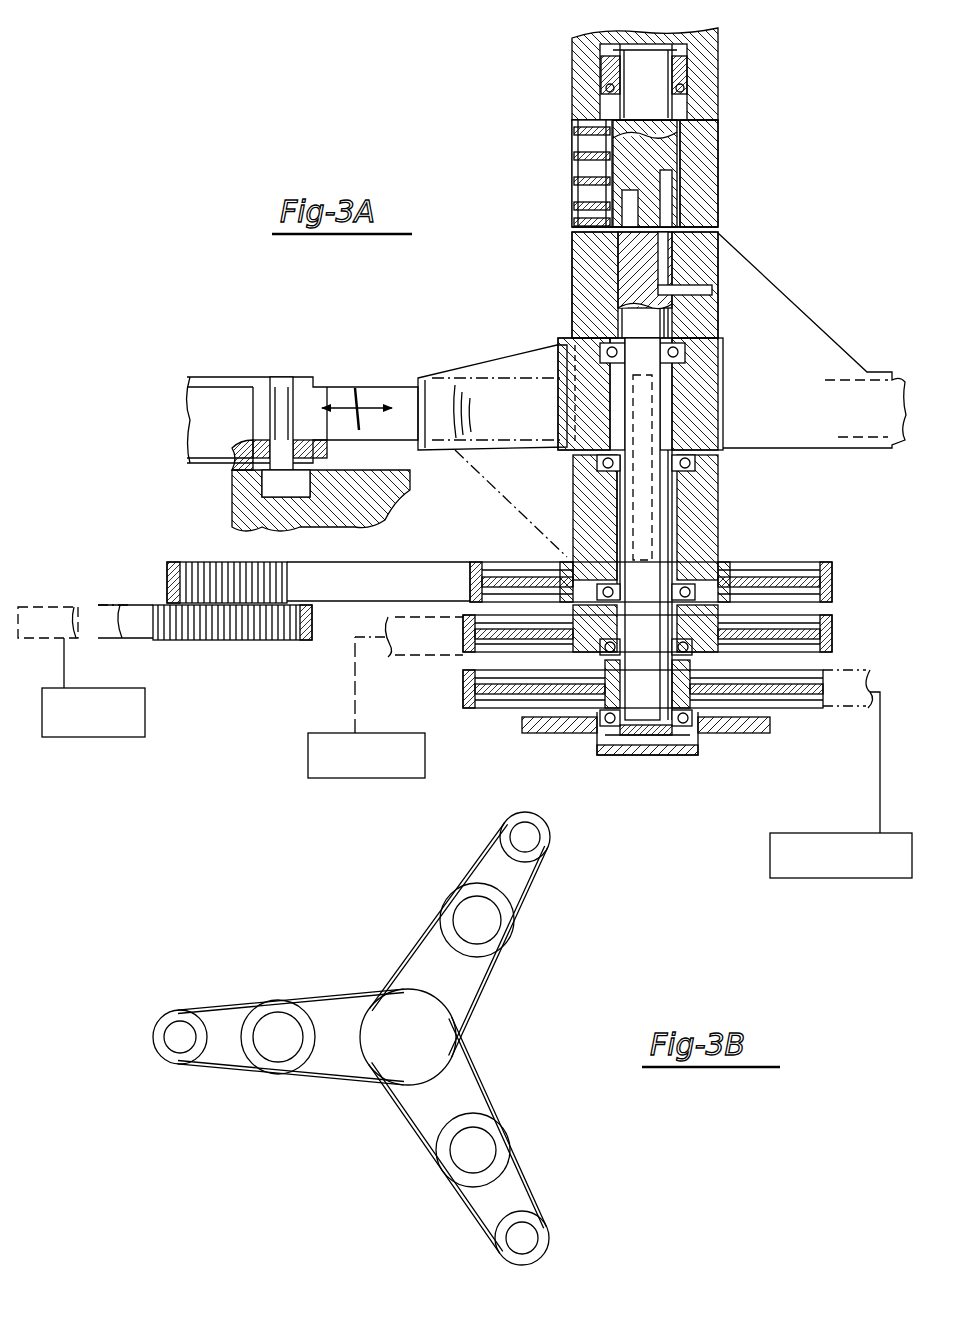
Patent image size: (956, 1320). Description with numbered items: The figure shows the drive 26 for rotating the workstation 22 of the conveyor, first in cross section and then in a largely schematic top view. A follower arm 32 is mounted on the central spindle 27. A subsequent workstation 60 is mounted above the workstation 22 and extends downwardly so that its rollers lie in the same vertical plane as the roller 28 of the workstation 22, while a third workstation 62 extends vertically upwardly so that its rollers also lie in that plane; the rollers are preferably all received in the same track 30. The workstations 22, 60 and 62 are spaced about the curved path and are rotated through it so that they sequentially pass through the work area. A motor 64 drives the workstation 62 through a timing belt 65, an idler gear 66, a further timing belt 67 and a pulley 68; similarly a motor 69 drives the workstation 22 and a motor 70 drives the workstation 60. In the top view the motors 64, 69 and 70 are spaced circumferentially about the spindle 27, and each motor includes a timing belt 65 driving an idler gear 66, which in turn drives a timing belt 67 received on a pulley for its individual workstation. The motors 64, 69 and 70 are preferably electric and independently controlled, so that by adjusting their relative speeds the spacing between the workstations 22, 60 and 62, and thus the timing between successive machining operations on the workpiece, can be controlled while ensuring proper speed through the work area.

In FIG. 3A, the workstation 22 is at (232, 380).
In FIG. 3A, the drive 26 is at (742, 172).
In FIG. 3B, the drive 26 is at (522, 1020).
In FIG. 3A, the spindle 27 is at (628, 327).
In FIG. 3B, the spindle 27 is at (393, 1005).
In FIG. 3A, the roller 28 is at (282, 492).
In FIG. 3A, the track 30 is at (232, 487).
In FIG. 3A, the follower arm 32 is at (474, 363).
In FIG. 3A, the subsequent workstation 60 is at (772, 292).
In FIG. 3A, the third workstation 62 is at (708, 517).
In FIG. 3A, the motor 64 is at (122, 735).
In FIG. 3B, the motor 64 is at (172, 1032).
In FIG. 3A, the timing belt 65 is at (52, 620).
In FIG. 3B, the timing belt 65 is at (235, 1010).
In FIG. 3A, the idler gear 66 is at (222, 560).
In FIG. 3B, the idler gear 66 is at (266, 1030).
In FIG. 3A, the timing belt 67 is at (343, 582).
In FIG. 3B, the timing belt 67 is at (356, 1010).
In FIG. 3A, the pulley 68 is at (476, 565).
In FIG. 3A, the motor 69 is at (308, 760).
In FIG. 3B, the motor 69 is at (525, 830).
In FIG. 3A, the motor 70 is at (770, 866).
In FIG. 3B, the motor 70 is at (530, 1235).